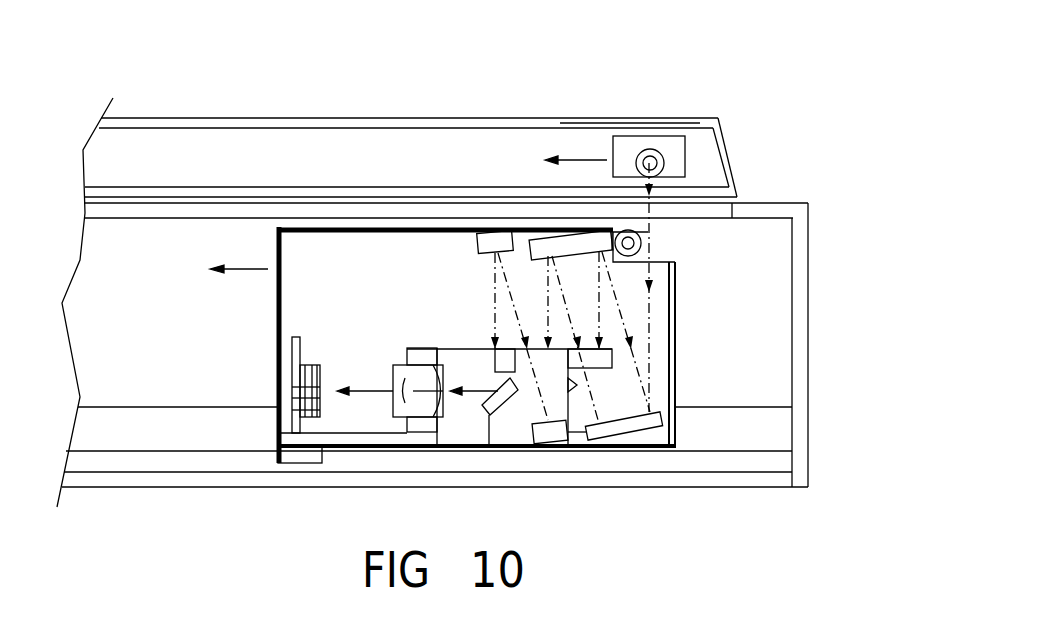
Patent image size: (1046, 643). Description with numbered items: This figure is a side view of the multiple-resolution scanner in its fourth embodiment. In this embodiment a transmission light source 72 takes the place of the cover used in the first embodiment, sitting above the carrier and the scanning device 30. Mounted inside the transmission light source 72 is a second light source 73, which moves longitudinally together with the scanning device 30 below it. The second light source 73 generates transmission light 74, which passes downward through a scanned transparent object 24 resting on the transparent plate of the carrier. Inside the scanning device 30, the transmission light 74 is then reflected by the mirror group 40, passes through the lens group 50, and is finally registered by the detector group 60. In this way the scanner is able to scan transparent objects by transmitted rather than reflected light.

The scanned transparent object 24 is at (322, 205).
The scanning device 30 is at (246, 325).
The mirror group 40 is at (478, 308).
The lens group 50 is at (374, 344).
The detector group 60 is at (303, 326).
The transmission light source 72 is at (630, 123).
The second light source 73 is at (650, 163).
The transmission light 74 is at (650, 230).